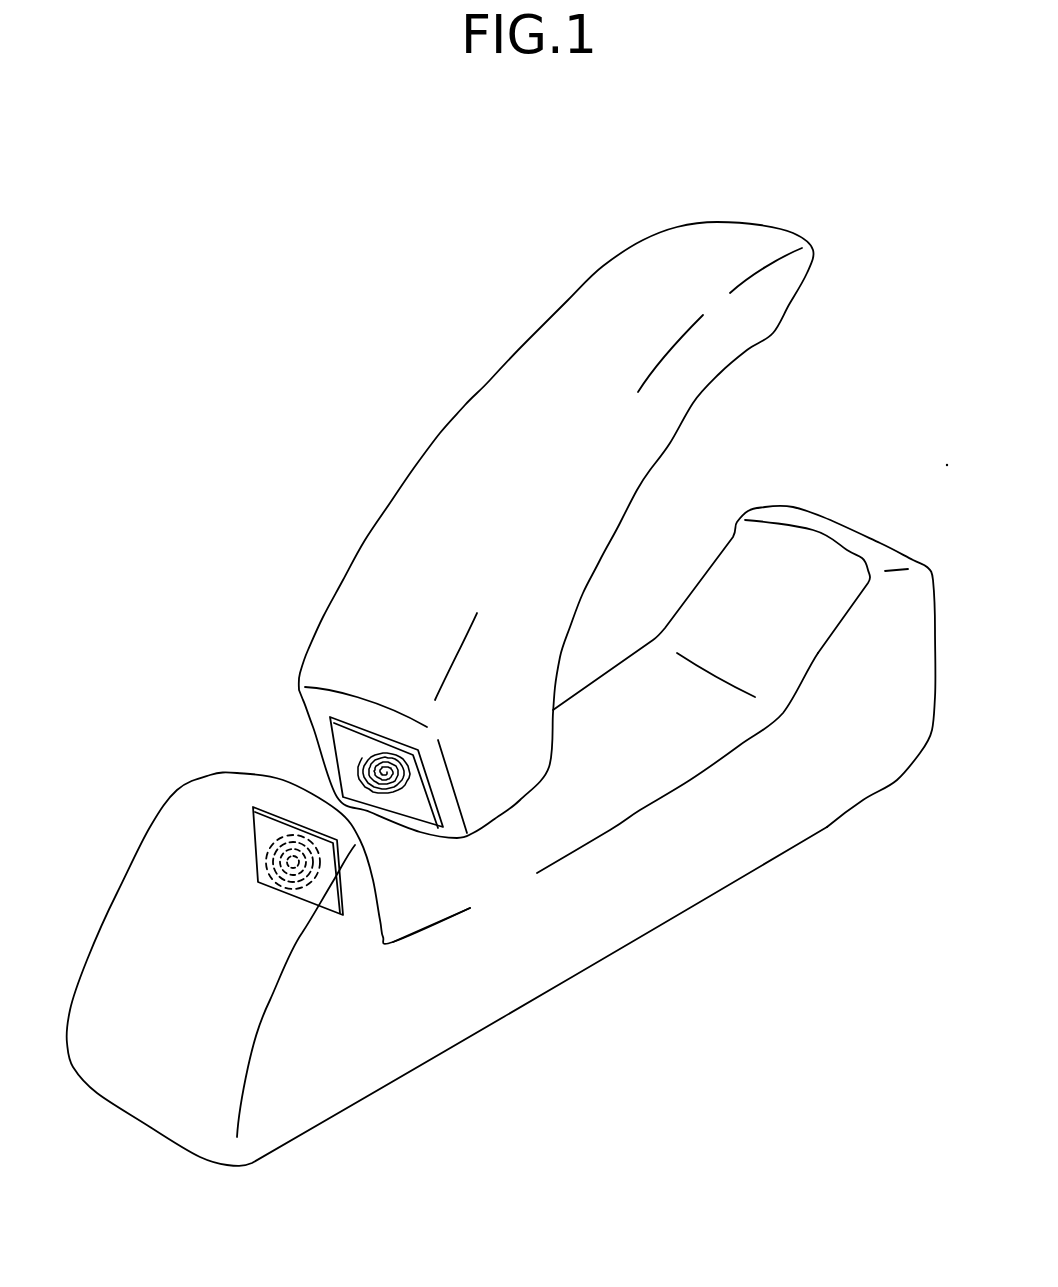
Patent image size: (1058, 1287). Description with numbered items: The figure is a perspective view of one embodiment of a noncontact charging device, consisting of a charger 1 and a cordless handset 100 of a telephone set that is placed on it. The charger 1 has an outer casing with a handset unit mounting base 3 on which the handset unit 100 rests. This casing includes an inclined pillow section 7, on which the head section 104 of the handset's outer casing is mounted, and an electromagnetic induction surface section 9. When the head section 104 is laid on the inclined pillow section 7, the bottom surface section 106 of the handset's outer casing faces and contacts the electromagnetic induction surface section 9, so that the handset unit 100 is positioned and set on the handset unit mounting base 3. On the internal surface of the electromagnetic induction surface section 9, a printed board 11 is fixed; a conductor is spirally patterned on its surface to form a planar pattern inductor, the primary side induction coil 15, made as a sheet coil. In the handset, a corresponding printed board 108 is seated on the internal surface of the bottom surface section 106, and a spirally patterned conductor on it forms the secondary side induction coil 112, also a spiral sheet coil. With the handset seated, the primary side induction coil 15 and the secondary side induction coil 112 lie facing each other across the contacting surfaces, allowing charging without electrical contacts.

The charger 1 is at (675, 875).
The handset unit mounting base 3 is at (670, 748).
The inclined pillow section 7 is at (818, 573).
The electromagnetic induction surface section 9 is at (375, 882).
The printed board 11 is at (263, 833).
The primary side induction coil 15 is at (300, 887).
The cordless handset 100 is at (688, 368).
The head section 104 is at (767, 317).
The bottom surface section 106 is at (330, 693).
The printed board 108 is at (420, 800).
The secondary side induction coil 112 is at (388, 750).